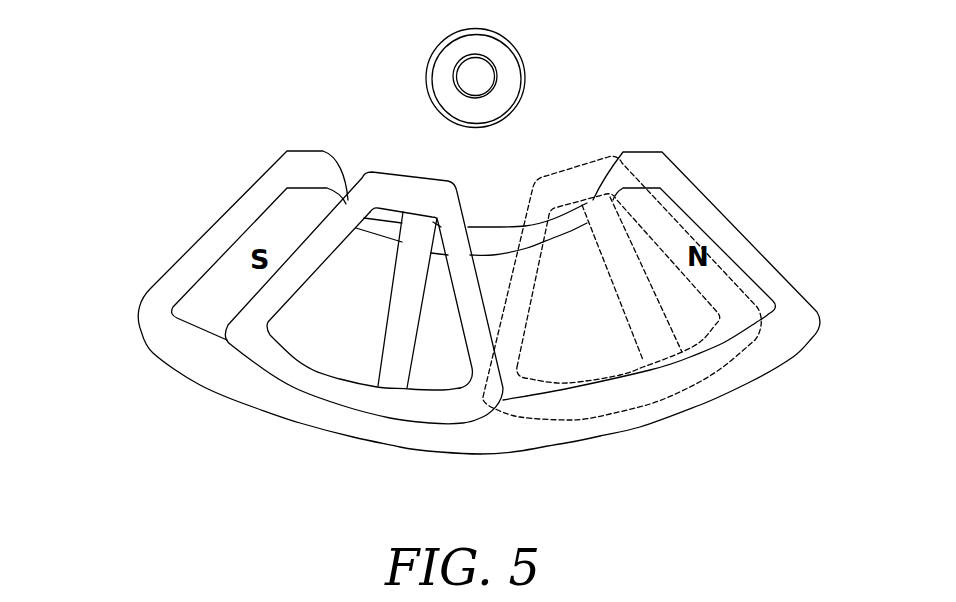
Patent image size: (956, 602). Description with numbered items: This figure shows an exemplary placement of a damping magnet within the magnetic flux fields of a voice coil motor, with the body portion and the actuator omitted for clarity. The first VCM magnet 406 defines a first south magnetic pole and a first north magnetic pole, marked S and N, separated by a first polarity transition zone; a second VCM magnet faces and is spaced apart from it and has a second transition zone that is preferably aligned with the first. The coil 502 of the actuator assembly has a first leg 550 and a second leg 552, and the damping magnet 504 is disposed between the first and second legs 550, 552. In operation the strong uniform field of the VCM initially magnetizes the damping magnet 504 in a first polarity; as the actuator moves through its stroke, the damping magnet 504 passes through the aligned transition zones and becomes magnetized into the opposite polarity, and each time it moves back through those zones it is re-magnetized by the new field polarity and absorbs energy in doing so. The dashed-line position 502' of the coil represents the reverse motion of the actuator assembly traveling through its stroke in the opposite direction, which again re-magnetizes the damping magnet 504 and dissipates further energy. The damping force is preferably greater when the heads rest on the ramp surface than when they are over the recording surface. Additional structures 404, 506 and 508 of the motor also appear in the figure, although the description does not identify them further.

The outer magnet return yoke arm 404 is at (743, 248).
The first VCM magnet 406 is at (682, 217).
The coil 502 is at (364, 278).
The coil in displaced position 502' is at (622, 266).
The damping magnet 504 is at (390, 298).
The outer yoke arm 506 is at (308, 162).
The pivot bearing 508 is at (523, 78).
The first leg 550 is at (300, 270).
The second leg 552 is at (473, 320).